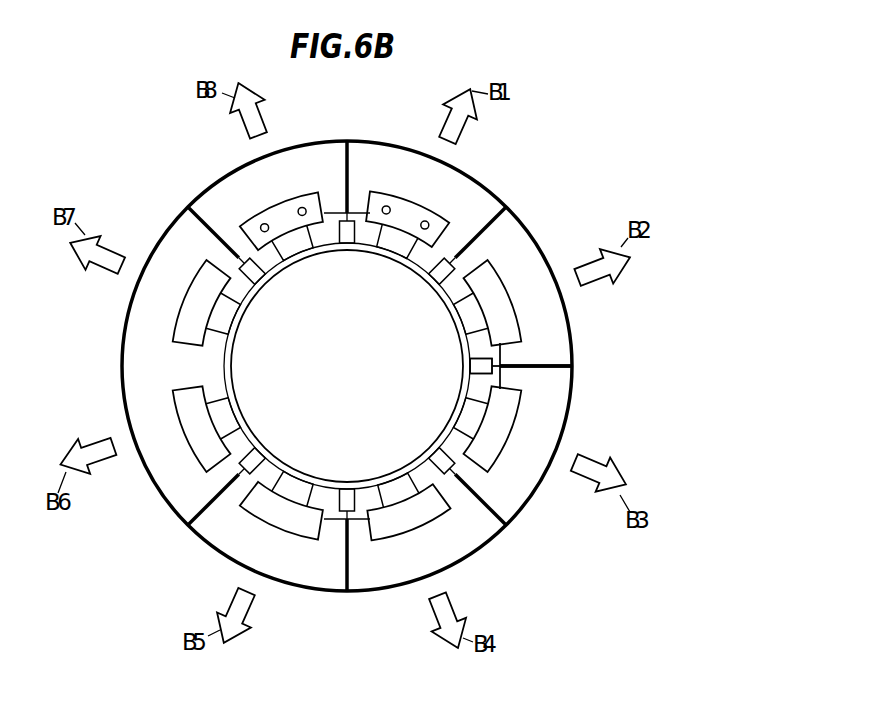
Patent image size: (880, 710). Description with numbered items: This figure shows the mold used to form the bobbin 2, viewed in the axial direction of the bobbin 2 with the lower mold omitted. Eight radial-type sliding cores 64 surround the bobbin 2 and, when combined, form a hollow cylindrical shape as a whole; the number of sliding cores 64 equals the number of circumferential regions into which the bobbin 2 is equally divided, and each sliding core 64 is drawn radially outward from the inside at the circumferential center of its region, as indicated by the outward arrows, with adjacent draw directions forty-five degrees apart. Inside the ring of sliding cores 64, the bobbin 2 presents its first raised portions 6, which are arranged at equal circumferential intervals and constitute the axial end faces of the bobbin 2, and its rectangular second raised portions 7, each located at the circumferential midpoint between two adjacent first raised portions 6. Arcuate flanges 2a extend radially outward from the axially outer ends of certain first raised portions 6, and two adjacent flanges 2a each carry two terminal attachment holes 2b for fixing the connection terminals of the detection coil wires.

The bobbin 2 is at (248, 202).
The flange 2a is at (384, 205).
The terminal attachment hole 2b is at (304, 207).
The sliding core 64 is at (513, 224).
The first raised portion 6 is at (475, 315).
The second raised portion 7 is at (497, 373).